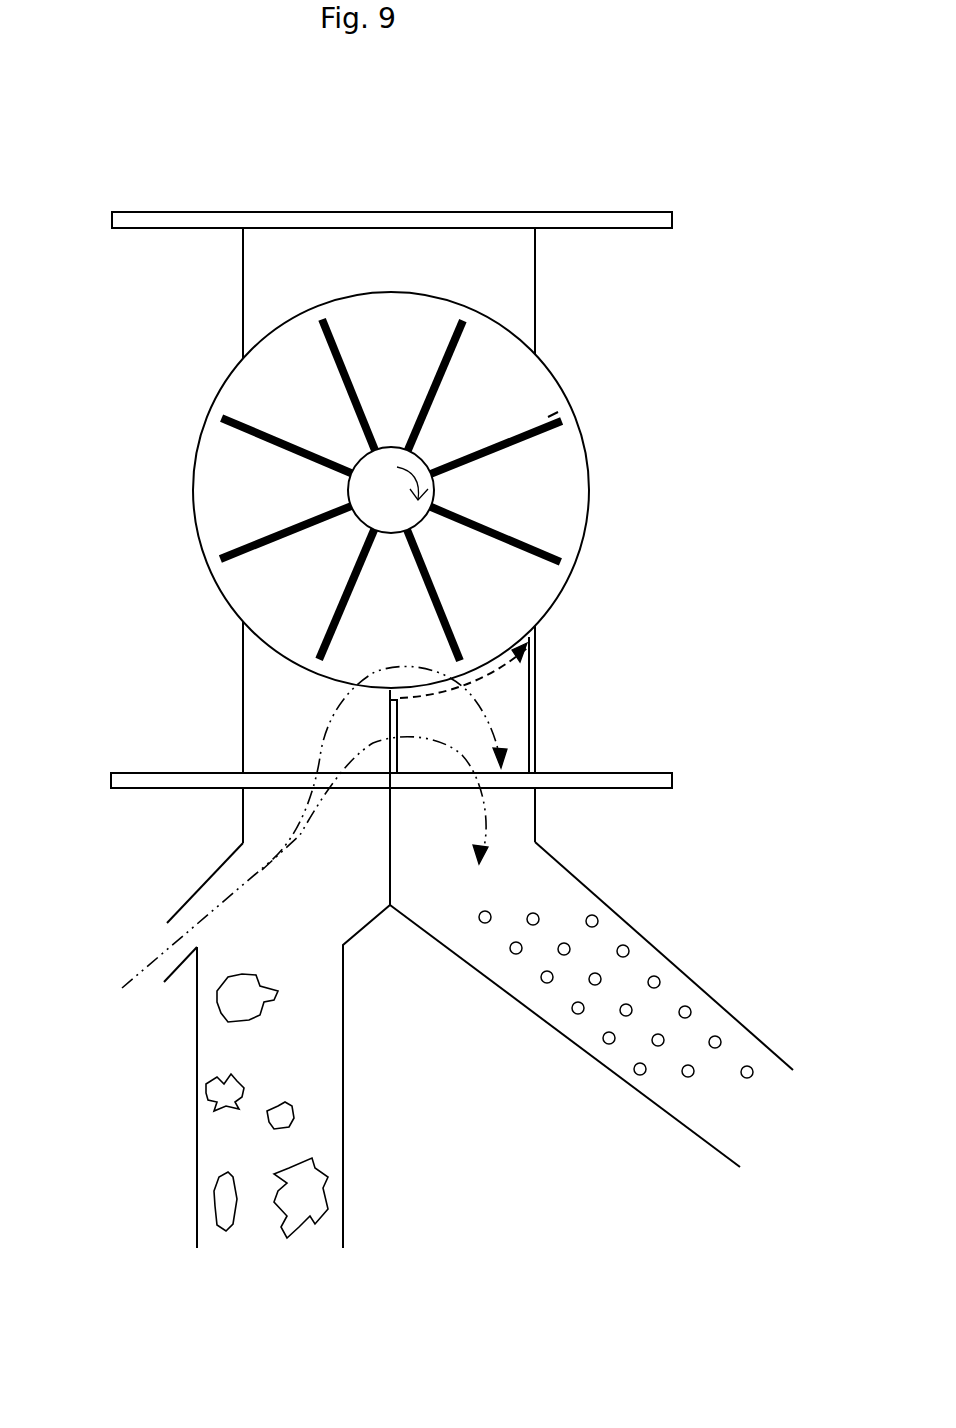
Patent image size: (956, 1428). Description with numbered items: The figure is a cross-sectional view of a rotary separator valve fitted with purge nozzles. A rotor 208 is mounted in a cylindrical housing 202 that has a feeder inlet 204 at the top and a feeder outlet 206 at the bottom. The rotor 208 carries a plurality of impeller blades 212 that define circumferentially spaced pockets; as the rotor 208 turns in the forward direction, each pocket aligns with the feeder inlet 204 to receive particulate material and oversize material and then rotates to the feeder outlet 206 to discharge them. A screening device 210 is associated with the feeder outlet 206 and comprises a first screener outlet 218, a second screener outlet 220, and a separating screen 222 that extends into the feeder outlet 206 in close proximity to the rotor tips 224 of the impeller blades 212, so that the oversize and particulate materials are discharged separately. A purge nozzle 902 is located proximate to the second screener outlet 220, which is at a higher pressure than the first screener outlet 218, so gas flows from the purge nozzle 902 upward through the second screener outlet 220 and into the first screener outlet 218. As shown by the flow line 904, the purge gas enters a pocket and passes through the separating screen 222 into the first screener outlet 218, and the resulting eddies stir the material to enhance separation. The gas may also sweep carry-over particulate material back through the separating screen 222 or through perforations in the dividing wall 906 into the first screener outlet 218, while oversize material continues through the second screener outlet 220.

The cylindrical housing 202 is at (197, 466).
The feeder inlet 204 is at (423, 245).
The feeder outlet 206 is at (529, 735).
The rotor 208 is at (390, 448).
The screening device 210 is at (537, 819).
The impeller blades 212 is at (438, 583).
The first screener outlet 218 is at (790, 1135).
The second screener outlet 220 is at (294, 1277).
The separating screen 222 is at (530, 692).
The rotor tips 224 is at (556, 403).
The purge nozzle 902 is at (172, 913).
The flow line 904 is at (328, 722).
The dividing wall 906 is at (328, 792).